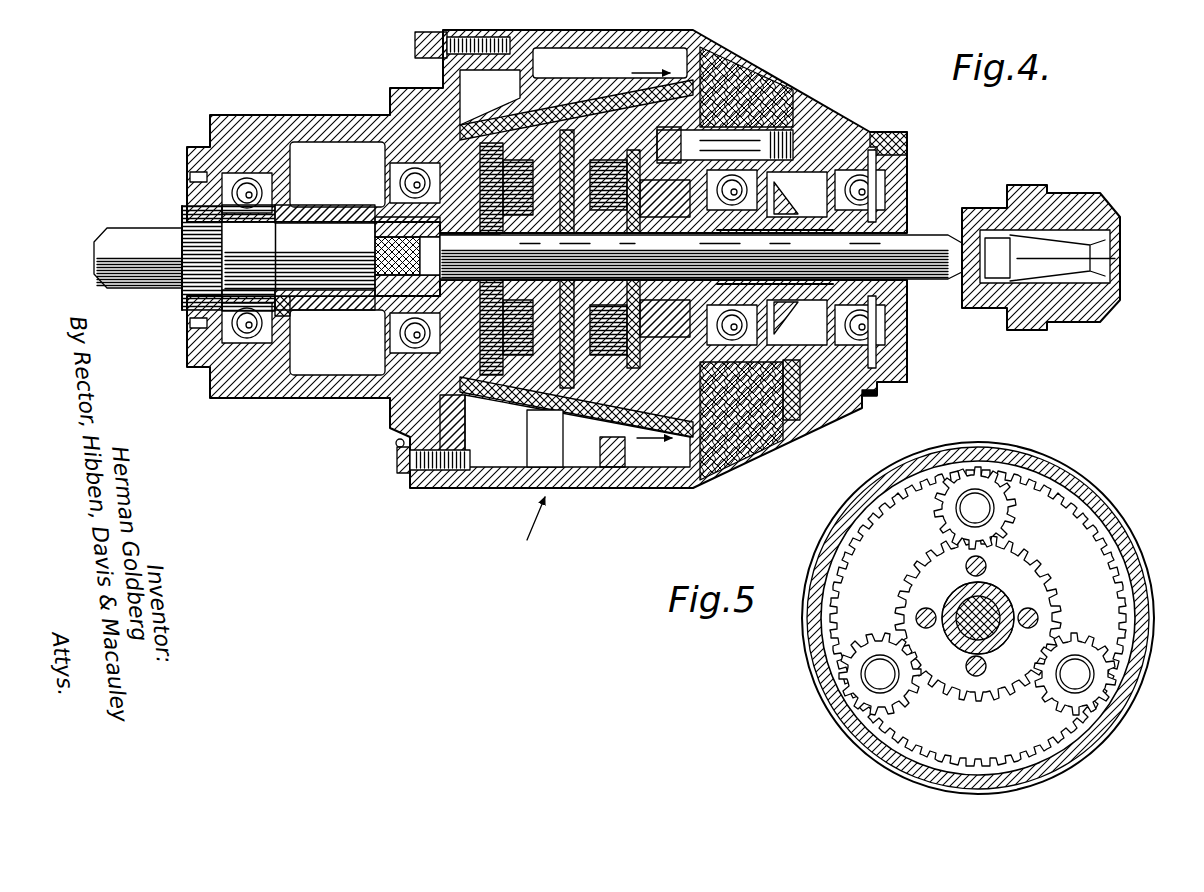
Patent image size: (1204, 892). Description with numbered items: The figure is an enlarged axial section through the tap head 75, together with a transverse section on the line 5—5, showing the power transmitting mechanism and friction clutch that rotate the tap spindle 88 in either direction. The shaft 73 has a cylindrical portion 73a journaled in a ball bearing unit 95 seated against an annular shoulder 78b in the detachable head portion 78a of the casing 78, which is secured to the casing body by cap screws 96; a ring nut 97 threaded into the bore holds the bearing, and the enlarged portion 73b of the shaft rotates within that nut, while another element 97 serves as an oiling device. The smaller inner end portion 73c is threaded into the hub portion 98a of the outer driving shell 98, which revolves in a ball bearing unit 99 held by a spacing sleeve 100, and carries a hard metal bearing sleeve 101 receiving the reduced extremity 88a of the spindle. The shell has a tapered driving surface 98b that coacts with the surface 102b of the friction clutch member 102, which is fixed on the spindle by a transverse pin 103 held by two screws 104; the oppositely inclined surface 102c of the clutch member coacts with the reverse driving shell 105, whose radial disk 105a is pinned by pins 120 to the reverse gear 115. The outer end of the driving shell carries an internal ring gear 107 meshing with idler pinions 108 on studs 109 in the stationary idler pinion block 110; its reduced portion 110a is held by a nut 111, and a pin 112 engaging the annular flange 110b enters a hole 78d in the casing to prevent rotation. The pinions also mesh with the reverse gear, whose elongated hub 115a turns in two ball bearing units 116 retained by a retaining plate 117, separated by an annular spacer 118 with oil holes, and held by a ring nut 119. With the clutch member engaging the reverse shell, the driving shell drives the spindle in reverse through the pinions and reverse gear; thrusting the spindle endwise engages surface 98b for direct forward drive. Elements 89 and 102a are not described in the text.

In FIG. 4, the section line 5- 5 is at (652, 256).
In FIG. 4, the shaft 73 is at (118, 235).
In FIG. 4, the cylindrical portion 73a is at (230, 240).
In FIG. 4, the enlarged portion 73b is at (194, 278).
In FIG. 4, the inner end portion 73c is at (300, 236).
In FIG. 4, the tap head 75 is at (526, 530).
In FIG. 4, the casing 78 is at (655, 492).
In FIG. 4, the detachable head portion 78a is at (355, 113).
In FIG. 4, the annular shoulder 78b is at (284, 345).
In FIG. 4, the hole 78d is at (878, 396).
In FIG. 4, the tap spindle 88 is at (938, 232).
In FIG. 5, the tap spindle 88 is at (948, 612).
In FIG. 4, the reduced extremity 88a is at (470, 253).
In FIG. 4, the coupling 89 is at (1043, 190).
In FIG. 4, the ball bearing unit 95 is at (245, 345).
In FIG. 4, the cap screws 96 is at (415, 45).
In FIG. 4, the ring nut 97 is at (397, 458).
In FIG. 4, the outer driving shell 98 is at (568, 430).
In FIG. 5, the outer driving shell 98 is at (866, 506).
In FIG. 4, the hub portion 98a is at (372, 192).
In FIG. 4, the annular tapered frictional driving surface 98b is at (540, 105).
In FIG. 4, the ball bearing unit 99 is at (388, 340).
In FIG. 4, the spacing sleeve 100 is at (337, 342).
In FIG. 4, the bearing sleeve 101 is at (298, 258).
In FIG. 4, the friction clutch member 102 is at (575, 420).
In FIG. 4, the wall 102a is at (458, 472).
In FIG. 4, the annular tapered driving surface 102b is at (485, 465).
In FIG. 4, the annular tapered driving surface 102c is at (610, 470).
In FIG. 4, the transverse pin 103 is at (508, 132).
In FIG. 4, the screws 104 is at (538, 259).
In FIG. 4, the reverse driving shell 105 is at (617, 115).
In FIG. 4, the radial disk 105a is at (619, 259).
In FIG. 4, the internal ring gear 107 is at (720, 58).
In FIG. 5, the internal ring gear 107 is at (844, 539).
In FIG. 5, the idler pinions 108 is at (1088, 722).
In FIG. 4, the studs 109 is at (748, 115).
In FIG. 5, the studs 109 is at (1077, 680).
In FIG. 4, the idler pinion block 110 is at (812, 128).
In FIG. 4, the reduced portion 110a is at (875, 100).
In FIG. 4, the annular flange 110b is at (822, 400).
In FIG. 4, the nut 111 is at (908, 345).
In FIG. 4, the pin 112 is at (835, 385).
In FIG. 5, the reverse gear 115 is at (1032, 582).
In FIG. 4, the elongated hub 115a is at (905, 292).
In FIG. 5, the elongated hub 115a is at (958, 602).
In FIG. 4, the ball bearing units 116 is at (905, 190).
In FIG. 4, the retaining plate 117 is at (742, 450).
In FIG. 4, the annular spacer 118 is at (701, 256).
In FIG. 4, the ring nut 119 is at (880, 205).
In FIG. 4, the pins 120 is at (668, 295).
In FIG. 5, the pins 120 is at (928, 628).